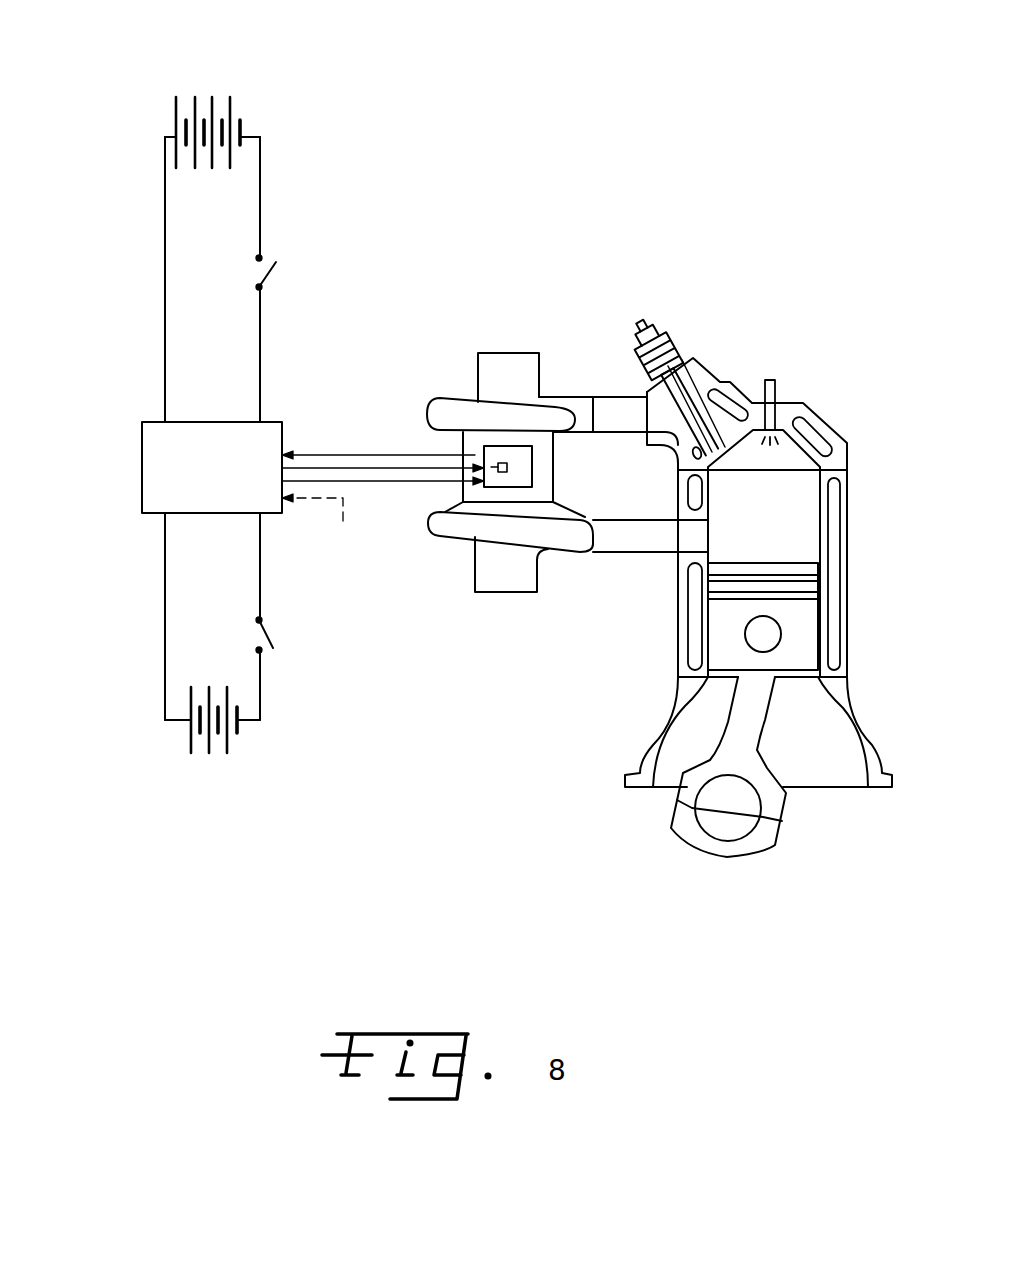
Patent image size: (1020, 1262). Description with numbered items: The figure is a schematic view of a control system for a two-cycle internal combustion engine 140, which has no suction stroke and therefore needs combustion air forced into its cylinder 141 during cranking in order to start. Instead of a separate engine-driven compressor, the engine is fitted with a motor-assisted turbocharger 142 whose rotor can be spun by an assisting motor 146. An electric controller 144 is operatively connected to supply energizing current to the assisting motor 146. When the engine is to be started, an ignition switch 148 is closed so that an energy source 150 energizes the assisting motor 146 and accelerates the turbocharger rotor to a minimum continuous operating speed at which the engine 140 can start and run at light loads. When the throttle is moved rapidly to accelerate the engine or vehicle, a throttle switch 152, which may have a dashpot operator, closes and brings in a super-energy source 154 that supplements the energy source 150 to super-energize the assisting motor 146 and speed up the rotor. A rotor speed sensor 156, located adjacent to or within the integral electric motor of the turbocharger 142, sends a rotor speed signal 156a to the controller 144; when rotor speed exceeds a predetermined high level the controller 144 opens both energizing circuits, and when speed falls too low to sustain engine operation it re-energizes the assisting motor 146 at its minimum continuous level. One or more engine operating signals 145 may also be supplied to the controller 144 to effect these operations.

The two-cycle internal combustion engine 140 is at (777, 289).
The cylinder 141 is at (804, 535).
The motor-assisted turbocharger 142 is at (457, 336).
The electric controller 144 is at (142, 447).
The engine operating signals 145 is at (344, 533).
The assisting motor 146 is at (512, 478).
The ignition switch 148 is at (274, 262).
The energy source 150 is at (229, 76).
The throttle switch 152 is at (275, 633).
The super-energy source 154 is at (226, 761).
The rotor speed sensor 156 is at (497, 465).
The rotor speed signal 156a is at (322, 452).